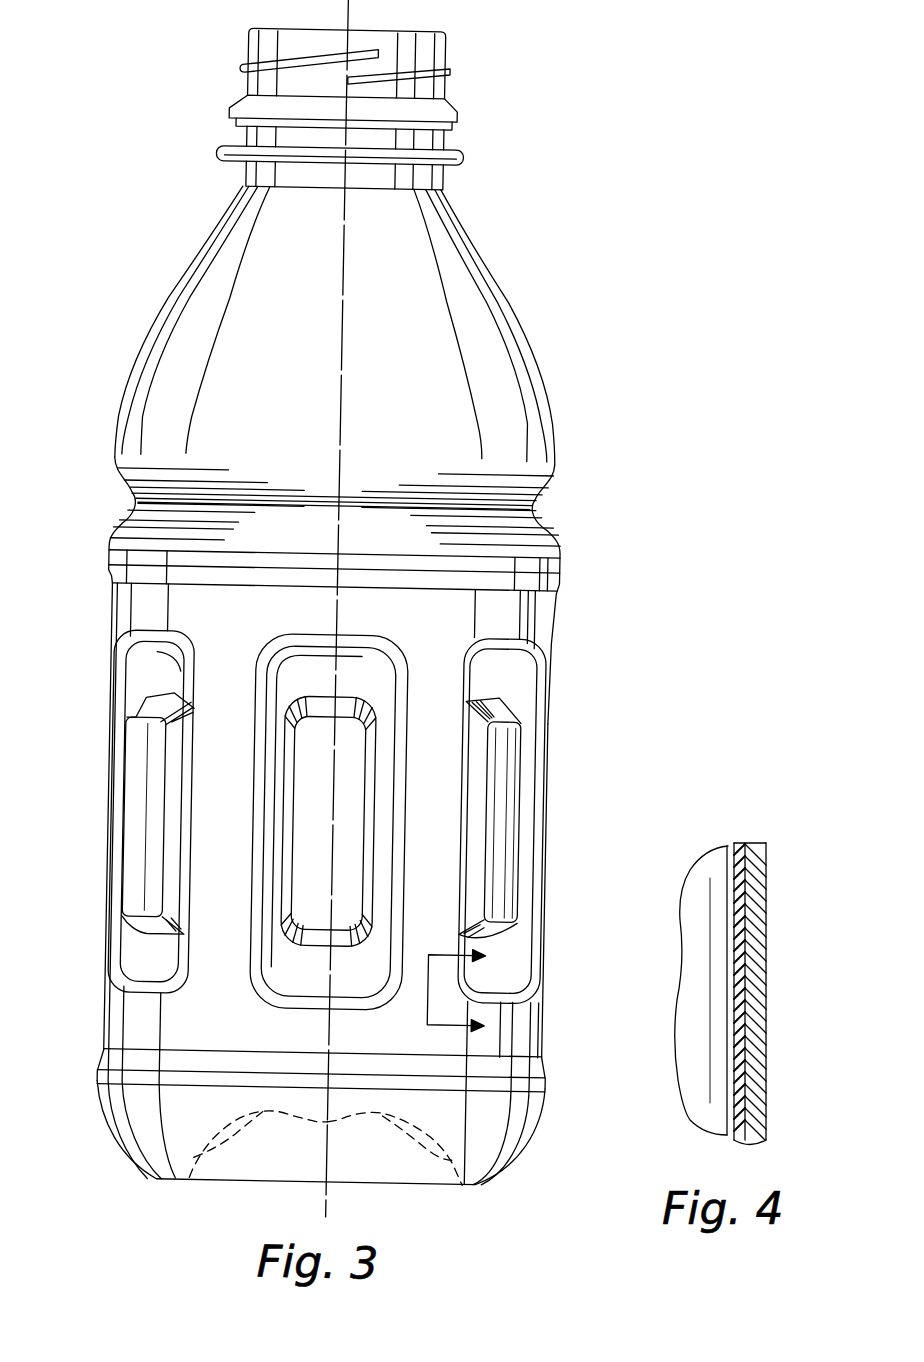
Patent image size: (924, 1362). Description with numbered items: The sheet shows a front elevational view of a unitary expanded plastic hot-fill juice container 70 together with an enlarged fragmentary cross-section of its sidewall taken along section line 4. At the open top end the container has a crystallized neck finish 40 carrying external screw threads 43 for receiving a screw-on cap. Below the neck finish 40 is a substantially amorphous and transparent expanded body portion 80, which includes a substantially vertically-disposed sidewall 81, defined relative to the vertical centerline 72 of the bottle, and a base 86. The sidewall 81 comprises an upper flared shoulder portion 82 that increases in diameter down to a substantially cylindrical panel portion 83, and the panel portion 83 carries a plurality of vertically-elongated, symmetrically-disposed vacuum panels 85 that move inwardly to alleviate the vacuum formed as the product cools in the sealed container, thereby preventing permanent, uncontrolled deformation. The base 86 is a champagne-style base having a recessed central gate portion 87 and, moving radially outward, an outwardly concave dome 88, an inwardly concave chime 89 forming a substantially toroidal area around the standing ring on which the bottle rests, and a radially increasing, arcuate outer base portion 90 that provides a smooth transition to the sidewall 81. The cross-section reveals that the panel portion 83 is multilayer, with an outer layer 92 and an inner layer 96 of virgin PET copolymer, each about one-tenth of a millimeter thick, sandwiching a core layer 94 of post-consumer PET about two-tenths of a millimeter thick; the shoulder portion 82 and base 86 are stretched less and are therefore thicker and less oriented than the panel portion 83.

In FIG. 3, the section line 4- 4 is at (470, 992).
In FIG. 3, the neck finish 40 is at (274, 107).
In FIG. 3, the external screw threads 43 is at (441, 69).
In FIG. 3, the container 70 is at (521, 189).
In FIG. 3, the vertical centerline 72 is at (337, 444).
In FIG. 3, the body portion 80 is at (207, 192).
In FIG. 3, the sidewall 81 is at (555, 462).
In FIG. 3, the shoulder portion 82 is at (516, 329).
In FIG. 3, the panel portion 83 is at (553, 632).
In FIG. 4, the panel portion 83 is at (753, 961).
In FIG. 3, the vacuum panels 85 is at (142, 695).
In FIG. 3, the base 86 is at (420, 1191).
In FIG. 3, the central gate portion 87 is at (327, 1122).
In FIG. 3, the dome 88 is at (246, 1132).
In FIG. 3, the chime 89 is at (473, 1183).
In FIG. 3, the outer base portion 90 is at (550, 1128).
In FIG. 4, the outer layer 92 is at (769, 852).
In FIG. 4, the core layer 94 is at (752, 842).
In FIG. 4, the inner layer 96 is at (731, 845).